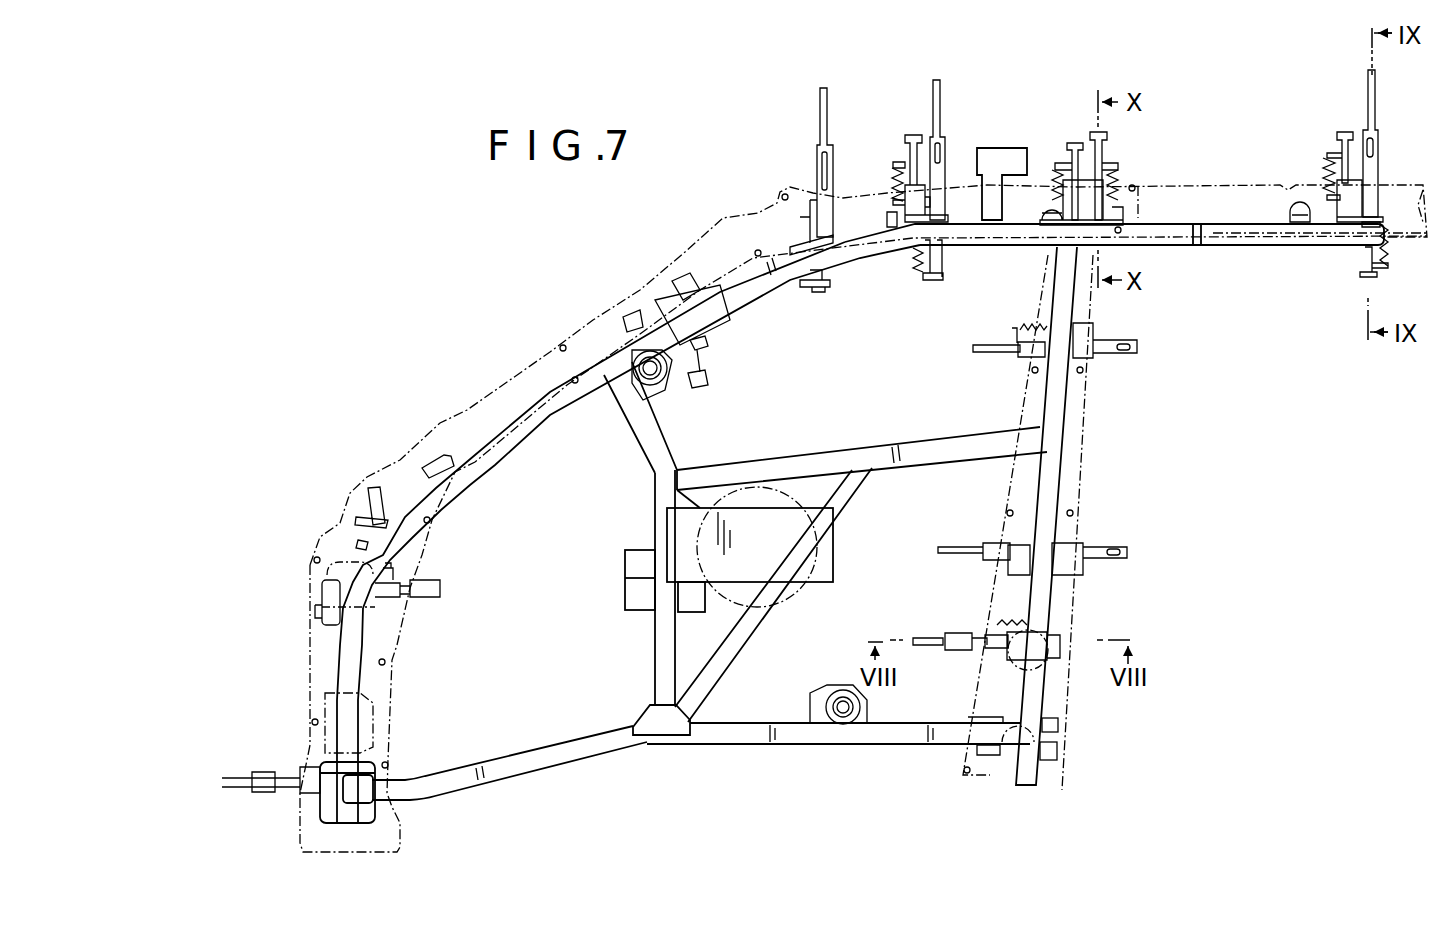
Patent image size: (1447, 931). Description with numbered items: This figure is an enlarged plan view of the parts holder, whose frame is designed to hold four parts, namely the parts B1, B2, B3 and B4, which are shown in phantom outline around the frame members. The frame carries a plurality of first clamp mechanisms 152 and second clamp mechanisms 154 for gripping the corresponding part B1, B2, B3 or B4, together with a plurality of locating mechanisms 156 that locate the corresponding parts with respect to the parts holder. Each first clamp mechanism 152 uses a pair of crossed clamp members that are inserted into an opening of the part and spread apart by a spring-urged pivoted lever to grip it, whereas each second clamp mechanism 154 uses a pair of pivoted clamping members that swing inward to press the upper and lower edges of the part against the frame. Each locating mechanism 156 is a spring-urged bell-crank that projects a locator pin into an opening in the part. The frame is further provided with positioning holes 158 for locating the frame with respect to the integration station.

The first clamp mechanism 152 is at (430, 572).
The second clamp mechanism 154 is at (805, 167).
The locating mechanism 156 is at (898, 150).
The positioning hole 158 is at (662, 380).
The part B1 is at (598, 320).
The part B2 is at (986, 240).
The part B3 is at (1085, 425).
The part B4 is at (1207, 182).